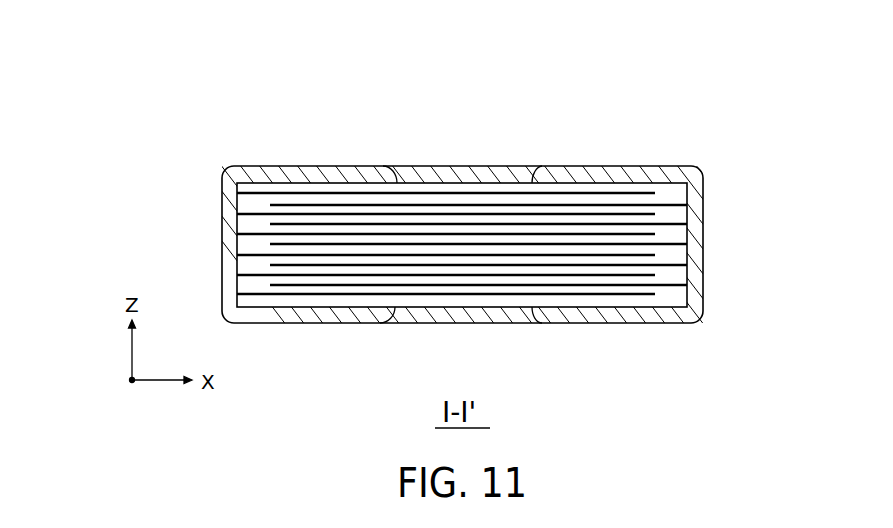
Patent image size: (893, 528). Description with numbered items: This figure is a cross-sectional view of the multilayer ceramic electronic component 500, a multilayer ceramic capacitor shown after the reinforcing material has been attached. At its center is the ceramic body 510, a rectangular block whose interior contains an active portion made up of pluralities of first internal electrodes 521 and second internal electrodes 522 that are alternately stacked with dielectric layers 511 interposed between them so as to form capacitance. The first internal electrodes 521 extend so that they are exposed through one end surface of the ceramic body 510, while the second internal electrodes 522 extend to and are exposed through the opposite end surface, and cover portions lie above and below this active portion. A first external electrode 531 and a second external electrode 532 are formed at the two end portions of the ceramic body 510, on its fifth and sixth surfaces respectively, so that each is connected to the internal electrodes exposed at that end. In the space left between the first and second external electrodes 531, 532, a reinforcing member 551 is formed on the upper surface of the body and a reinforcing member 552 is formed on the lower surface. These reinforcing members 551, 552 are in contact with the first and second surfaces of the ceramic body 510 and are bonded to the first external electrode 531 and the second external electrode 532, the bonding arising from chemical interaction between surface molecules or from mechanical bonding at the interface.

The multilayer ceramic electronic component 500 is at (475, 83).
The ceramic body 510 is at (413, 208).
The dielectric layer 511 is at (262, 200).
The first internal electrode 521 is at (248, 192).
The second internal electrode 522 is at (283, 207).
The first external electrode 531 is at (282, 178).
The second external electrode 532 is at (660, 178).
The reinforcing member 551 is at (505, 178).
The reinforcing member 552 is at (505, 324).